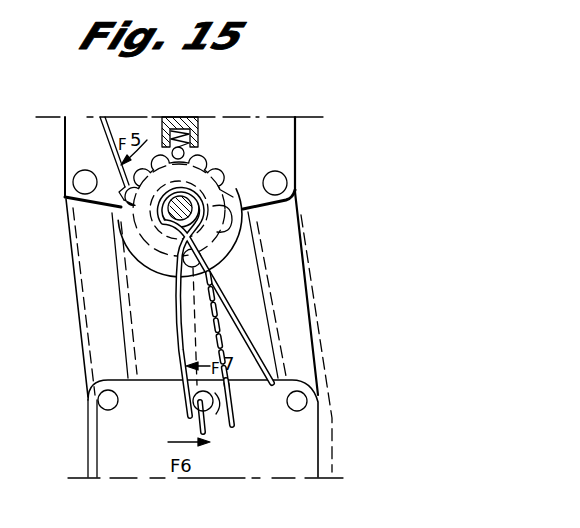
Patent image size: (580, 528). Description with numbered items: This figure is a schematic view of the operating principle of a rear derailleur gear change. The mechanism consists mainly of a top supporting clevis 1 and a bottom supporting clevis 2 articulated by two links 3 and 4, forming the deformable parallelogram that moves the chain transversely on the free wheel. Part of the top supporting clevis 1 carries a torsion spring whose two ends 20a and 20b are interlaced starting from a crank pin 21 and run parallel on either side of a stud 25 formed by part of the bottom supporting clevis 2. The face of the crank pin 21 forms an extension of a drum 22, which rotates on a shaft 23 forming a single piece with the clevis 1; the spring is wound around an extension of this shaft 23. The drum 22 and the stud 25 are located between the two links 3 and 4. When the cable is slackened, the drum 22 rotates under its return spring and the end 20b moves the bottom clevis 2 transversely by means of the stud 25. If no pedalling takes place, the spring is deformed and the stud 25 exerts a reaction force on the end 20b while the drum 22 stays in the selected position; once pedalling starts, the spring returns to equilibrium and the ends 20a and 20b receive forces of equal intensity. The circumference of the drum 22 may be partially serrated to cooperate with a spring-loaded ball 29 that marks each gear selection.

The top supporting clevis 1 is at (65, 149).
The bottom supporting clevis 2 is at (310, 447).
The link 3 is at (298, 322).
The link 4 is at (80, 309).
The spring end 20a is at (283, 362).
The spring end 20b is at (183, 388).
The crank pin 21 is at (178, 300).
The drum 22 is at (235, 228).
The shaft 23 is at (185, 200).
The stud 25 is at (207, 408).
The ball 29 is at (203, 142).